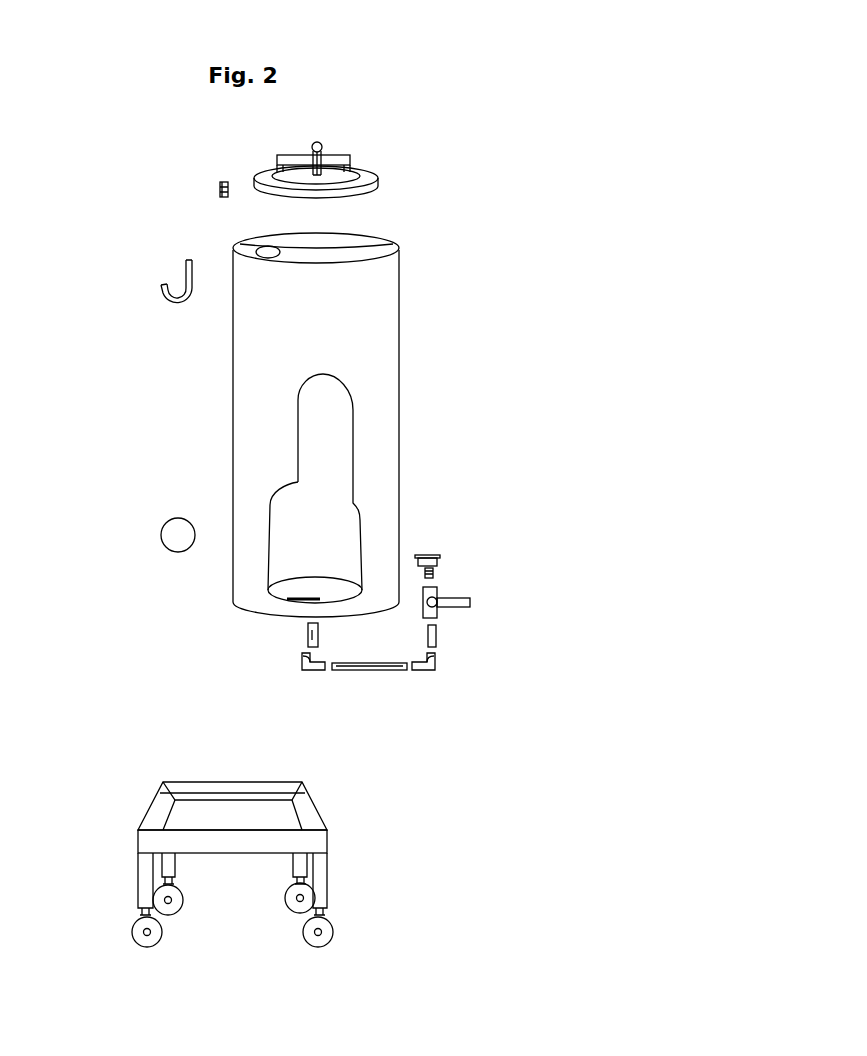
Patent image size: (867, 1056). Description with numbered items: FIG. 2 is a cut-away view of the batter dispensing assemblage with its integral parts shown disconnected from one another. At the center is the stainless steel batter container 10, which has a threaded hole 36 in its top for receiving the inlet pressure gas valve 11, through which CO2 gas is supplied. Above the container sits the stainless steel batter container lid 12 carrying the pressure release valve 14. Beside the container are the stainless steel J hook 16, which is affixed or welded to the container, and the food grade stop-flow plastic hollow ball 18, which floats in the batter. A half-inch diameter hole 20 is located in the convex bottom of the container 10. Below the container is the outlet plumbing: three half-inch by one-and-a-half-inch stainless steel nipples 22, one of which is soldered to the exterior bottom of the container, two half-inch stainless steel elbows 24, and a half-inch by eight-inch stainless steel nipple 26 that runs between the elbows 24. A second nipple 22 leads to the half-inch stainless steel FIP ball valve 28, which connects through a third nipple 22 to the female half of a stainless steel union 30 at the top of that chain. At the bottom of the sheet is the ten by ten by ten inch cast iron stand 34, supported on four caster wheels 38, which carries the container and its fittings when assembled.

The stainless steel batter container 10 is at (296, 333).
The inlet pressure gas valve 11 is at (217, 188).
The stainless steel batter container lid 12 is at (365, 167).
The pressure release valve 14 is at (323, 170).
The stainless steel J hook 16 is at (178, 303).
The stop-flow plastic hollow ball 18 is at (180, 533).
The half-inch diameter hole 20 is at (287, 599).
The half-inch by one-and-a-half-inch stainless steel nipples 22 is at (305, 637).
The half-inch stainless steel elbows 24 is at (302, 662).
The half-inch by eight-inch stainless steel nipple 26 is at (352, 670).
The half-inch stainless steel FIP ball valve 28 is at (430, 608).
The female half of stainless steel union 30 is at (445, 556).
The cast iron stand with caster wheels 34 is at (223, 896).
The threaded hole in batter container for inlet pressure gas valve 36 is at (265, 252).
The caster wheels 38 is at (138, 938).